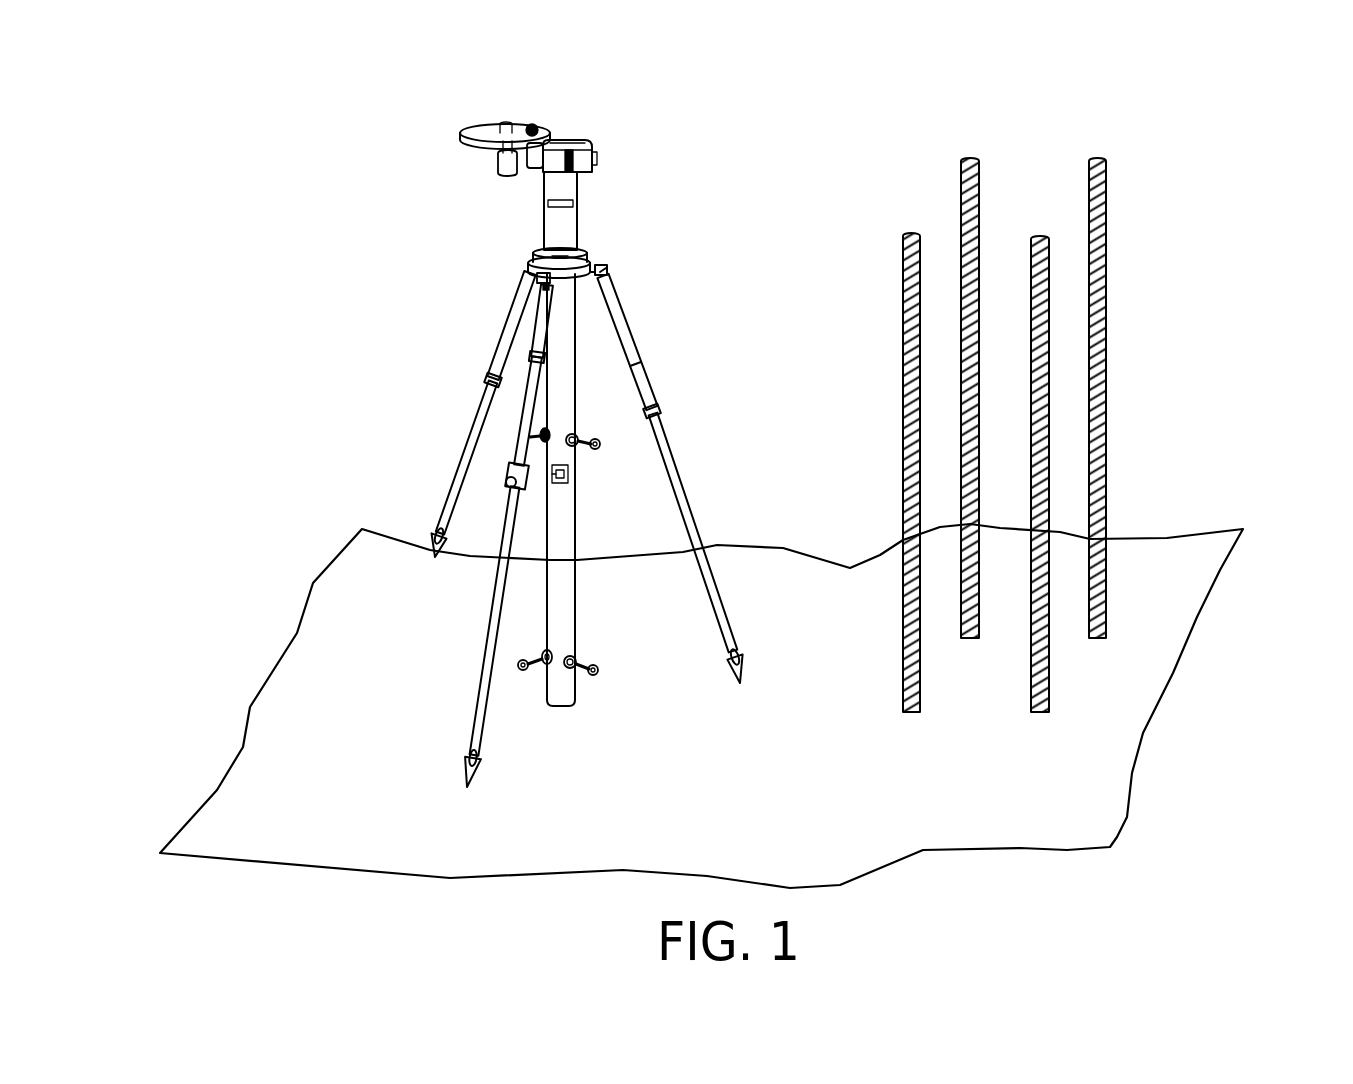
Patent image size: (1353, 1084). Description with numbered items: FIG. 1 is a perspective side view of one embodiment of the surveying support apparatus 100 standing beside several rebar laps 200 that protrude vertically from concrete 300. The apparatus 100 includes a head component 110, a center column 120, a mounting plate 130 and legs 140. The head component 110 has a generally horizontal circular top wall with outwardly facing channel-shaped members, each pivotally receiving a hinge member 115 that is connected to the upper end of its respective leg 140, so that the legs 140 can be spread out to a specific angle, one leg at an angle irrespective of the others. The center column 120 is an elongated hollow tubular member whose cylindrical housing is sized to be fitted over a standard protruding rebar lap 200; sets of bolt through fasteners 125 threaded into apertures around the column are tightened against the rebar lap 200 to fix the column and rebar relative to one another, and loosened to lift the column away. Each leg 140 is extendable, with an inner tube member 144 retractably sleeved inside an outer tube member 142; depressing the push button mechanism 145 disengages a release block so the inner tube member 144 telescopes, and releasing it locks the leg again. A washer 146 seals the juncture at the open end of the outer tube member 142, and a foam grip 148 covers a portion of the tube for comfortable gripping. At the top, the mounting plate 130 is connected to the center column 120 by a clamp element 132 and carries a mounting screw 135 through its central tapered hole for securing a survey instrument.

The surveying support apparatus 100 is at (537, 411).
The head component 110 is at (517, 263).
The hinge member 115 is at (557, 292).
The center column 120 is at (583, 635).
The bolt through fasteners 125 is at (602, 455).
The mounting plate 130 is at (455, 128).
The clamp element 132 is at (593, 140).
The mounting screw 135 is at (488, 172).
The legs 140 is at (442, 420).
The outer tube member 142 is at (703, 406).
The inner tube member 144 is at (650, 365).
The push button mechanism 145 is at (610, 250).
The washer 146 is at (662, 400).
The grip 148 is at (640, 305).
The rebar lap 200 is at (1037, 232).
The concrete 300 is at (857, 707).